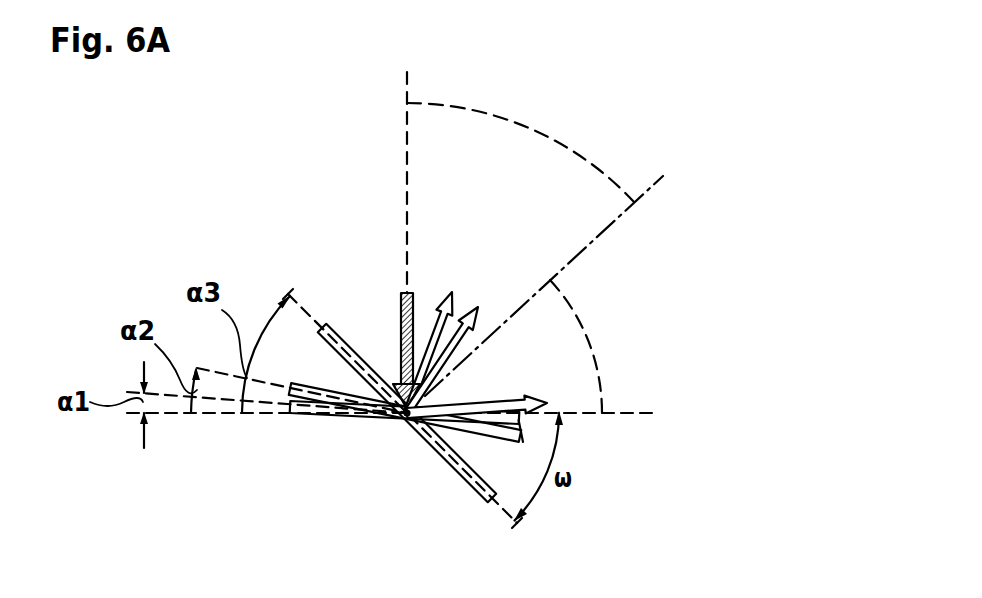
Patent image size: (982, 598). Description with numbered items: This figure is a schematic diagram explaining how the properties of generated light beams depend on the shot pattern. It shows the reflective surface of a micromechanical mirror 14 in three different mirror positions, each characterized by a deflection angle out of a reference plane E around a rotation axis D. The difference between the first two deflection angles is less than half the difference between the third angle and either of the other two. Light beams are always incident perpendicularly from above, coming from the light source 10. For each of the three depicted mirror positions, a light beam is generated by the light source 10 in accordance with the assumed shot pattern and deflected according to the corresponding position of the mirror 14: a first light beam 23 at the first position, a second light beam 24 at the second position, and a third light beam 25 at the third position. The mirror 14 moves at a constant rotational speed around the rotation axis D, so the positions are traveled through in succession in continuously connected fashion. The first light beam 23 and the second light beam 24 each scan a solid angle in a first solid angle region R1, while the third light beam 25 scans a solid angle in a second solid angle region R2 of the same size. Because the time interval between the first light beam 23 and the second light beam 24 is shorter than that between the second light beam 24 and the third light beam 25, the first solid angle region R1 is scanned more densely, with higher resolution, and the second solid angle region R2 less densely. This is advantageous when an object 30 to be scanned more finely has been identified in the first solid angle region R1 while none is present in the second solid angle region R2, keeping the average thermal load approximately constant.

The light source 10 is at (387, 70).
The micromechanical mirror 14 is at (303, 417).
The first light beam 23 is at (400, 325).
The second light beam 24 is at (482, 305).
The third light beam 25 is at (535, 398).
The object 30 is at (525, 139).
The first solid angle region R1 is at (563, 142).
The second solid angle region R2 is at (587, 333).
The rotation axis D is at (404, 417).
The reference plane E is at (212, 418).